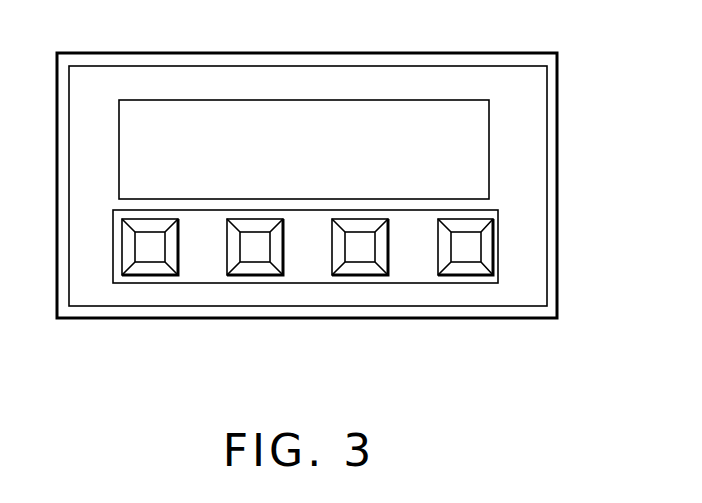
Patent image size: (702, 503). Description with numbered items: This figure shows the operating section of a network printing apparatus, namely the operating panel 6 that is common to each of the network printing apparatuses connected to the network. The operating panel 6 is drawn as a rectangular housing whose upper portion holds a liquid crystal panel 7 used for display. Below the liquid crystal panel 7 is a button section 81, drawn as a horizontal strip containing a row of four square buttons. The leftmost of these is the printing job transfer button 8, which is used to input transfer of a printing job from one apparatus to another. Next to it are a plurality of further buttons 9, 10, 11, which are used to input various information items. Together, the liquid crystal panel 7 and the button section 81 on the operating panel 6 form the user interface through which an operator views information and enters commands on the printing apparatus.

The operating panel 6 is at (433, 52).
The liquid crystal panel 7 is at (224, 106).
The printing job transfer button 8 is at (149, 268).
The button 9 is at (254, 268).
The button 10 is at (360, 268).
The button 11 is at (463, 268).
The button section 81 is at (498, 240).